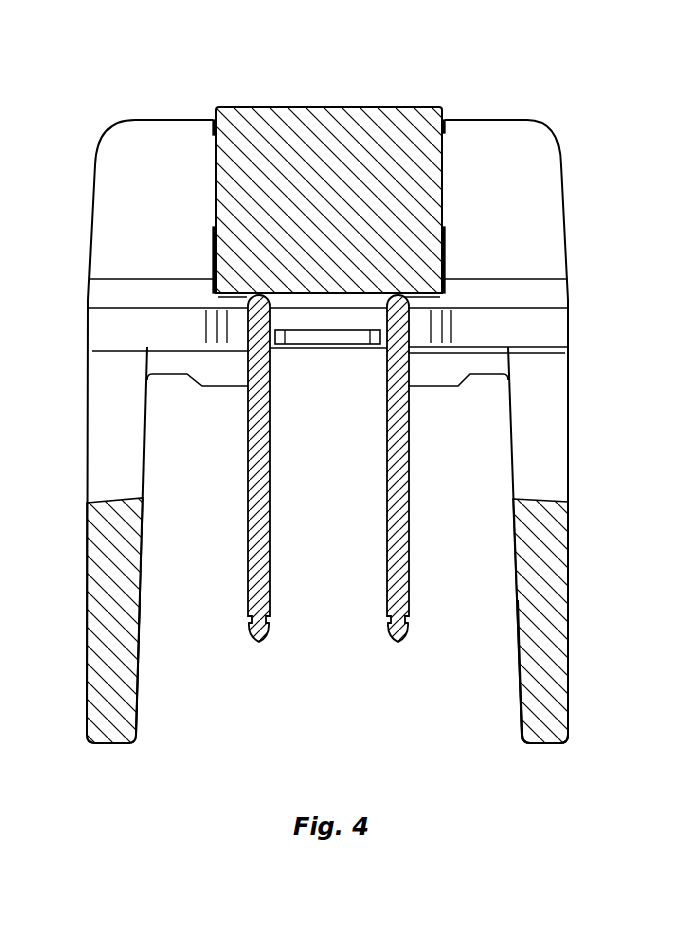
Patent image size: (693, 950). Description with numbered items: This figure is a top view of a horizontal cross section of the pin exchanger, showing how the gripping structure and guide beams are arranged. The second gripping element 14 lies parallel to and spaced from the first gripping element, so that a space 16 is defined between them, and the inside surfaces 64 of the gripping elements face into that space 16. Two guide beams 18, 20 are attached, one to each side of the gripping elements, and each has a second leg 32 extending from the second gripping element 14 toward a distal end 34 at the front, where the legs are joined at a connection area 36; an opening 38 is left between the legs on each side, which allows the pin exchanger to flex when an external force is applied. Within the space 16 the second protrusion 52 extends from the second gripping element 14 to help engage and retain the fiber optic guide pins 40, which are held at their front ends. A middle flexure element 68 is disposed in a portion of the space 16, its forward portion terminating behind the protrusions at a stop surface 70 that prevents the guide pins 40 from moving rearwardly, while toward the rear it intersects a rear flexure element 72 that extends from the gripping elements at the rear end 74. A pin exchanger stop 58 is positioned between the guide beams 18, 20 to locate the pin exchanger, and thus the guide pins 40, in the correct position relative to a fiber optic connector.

The second gripping element 14 is at (527, 120).
The space 16 is at (510, 132).
The guide beam 18 is at (568, 480).
The guide beam 20 is at (87, 496).
The second leg 32 is at (87, 414).
The distal end 34 is at (562, 752).
The connection area 36 is at (585, 585).
The opening 38 is at (109, 464).
The fiber optic guide pins 40 is at (397, 643).
The second protrusion 52 is at (326, 320).
The pin exchanger stop 58 is at (228, 387).
The inside surfaces 64 is at (143, 211).
The middle flexure element 68 is at (380, 125).
The stop surface 70 is at (417, 292).
The rear flexure element 72 is at (441, 108).
The rear end 74 is at (203, 108).